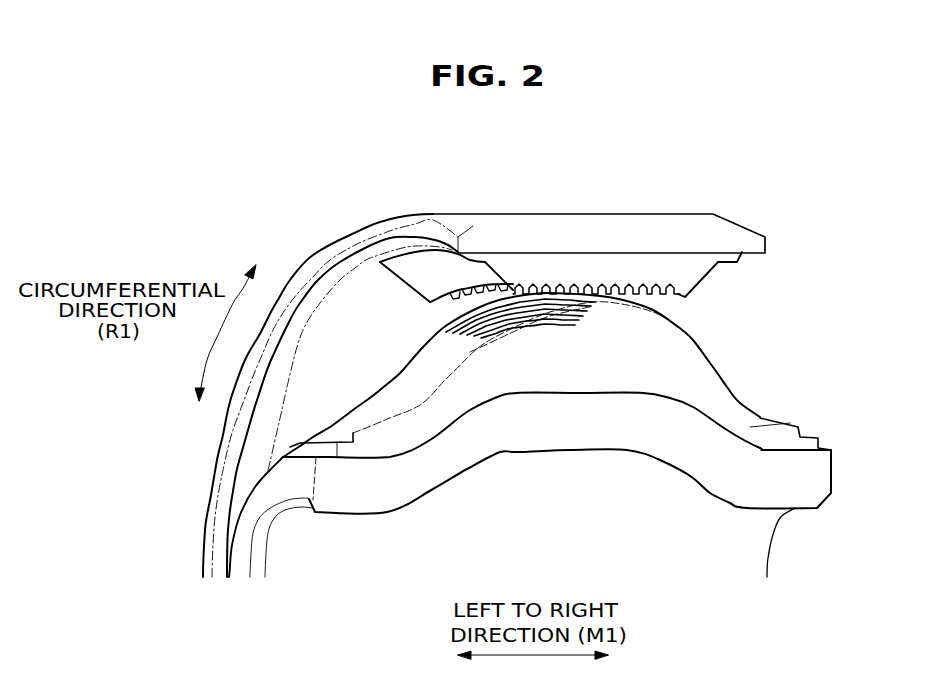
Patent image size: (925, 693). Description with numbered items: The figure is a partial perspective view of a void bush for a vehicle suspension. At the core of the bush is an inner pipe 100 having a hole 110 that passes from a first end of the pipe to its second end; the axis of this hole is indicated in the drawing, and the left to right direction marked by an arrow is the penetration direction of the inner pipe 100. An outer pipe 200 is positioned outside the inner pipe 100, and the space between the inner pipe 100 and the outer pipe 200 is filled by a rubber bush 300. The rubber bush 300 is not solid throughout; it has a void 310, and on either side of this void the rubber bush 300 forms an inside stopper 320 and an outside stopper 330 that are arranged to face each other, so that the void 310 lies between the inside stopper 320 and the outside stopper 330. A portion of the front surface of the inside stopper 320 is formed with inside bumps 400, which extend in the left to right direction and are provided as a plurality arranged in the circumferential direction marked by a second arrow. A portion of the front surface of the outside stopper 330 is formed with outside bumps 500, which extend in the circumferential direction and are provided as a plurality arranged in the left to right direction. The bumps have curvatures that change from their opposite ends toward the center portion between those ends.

The inner pipe 100 is at (240, 546).
The hole 110 is at (408, 545).
The outer pipe 200 is at (218, 468).
The rubber bush 300 is at (760, 418).
The void 310 is at (363, 341).
The inside stopper 320 is at (650, 358).
The outside stopper 330 is at (632, 270).
The inside bumps 400 is at (564, 295).
The outside bumps 500 is at (674, 298).